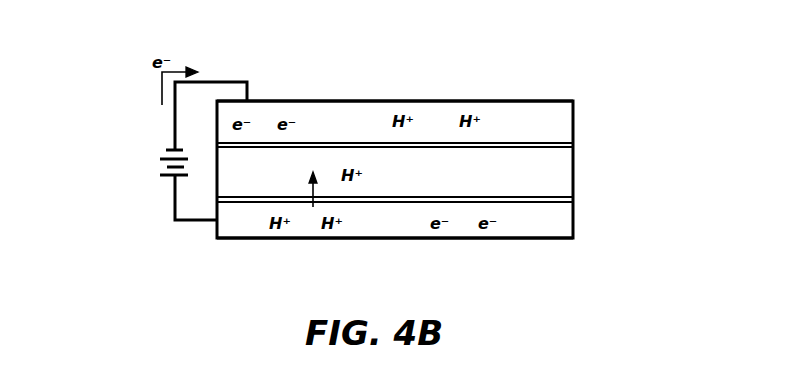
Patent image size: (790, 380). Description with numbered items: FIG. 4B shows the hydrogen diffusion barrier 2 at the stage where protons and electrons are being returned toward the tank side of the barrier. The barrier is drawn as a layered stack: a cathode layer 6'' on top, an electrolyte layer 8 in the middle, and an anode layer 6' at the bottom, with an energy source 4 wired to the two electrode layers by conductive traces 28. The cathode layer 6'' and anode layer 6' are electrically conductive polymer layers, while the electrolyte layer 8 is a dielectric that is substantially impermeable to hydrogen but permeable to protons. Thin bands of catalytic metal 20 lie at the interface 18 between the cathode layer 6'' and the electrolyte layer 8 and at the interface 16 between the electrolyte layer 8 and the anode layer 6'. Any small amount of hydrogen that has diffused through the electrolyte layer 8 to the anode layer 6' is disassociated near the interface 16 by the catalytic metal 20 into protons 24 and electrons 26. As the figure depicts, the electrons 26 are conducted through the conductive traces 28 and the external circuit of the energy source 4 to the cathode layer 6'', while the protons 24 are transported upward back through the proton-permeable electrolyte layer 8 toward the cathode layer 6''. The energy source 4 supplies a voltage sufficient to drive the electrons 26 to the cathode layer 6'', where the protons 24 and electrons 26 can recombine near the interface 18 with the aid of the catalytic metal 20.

The hydrogen diffusion barrier 2 is at (663, 53).
The energy source 4 is at (167, 152).
The anode layer 6' is at (395, 251).
The cathode layer 6'' is at (406, 81).
The electrolyte layer 8 is at (563, 167).
The interface 16 is at (566, 200).
The interface 18 is at (557, 143).
The catalytic metal 20 is at (578, 145).
The protons 24 is at (278, 233).
The electrons 26 is at (435, 232).
The conductive traces 28 is at (223, 80).